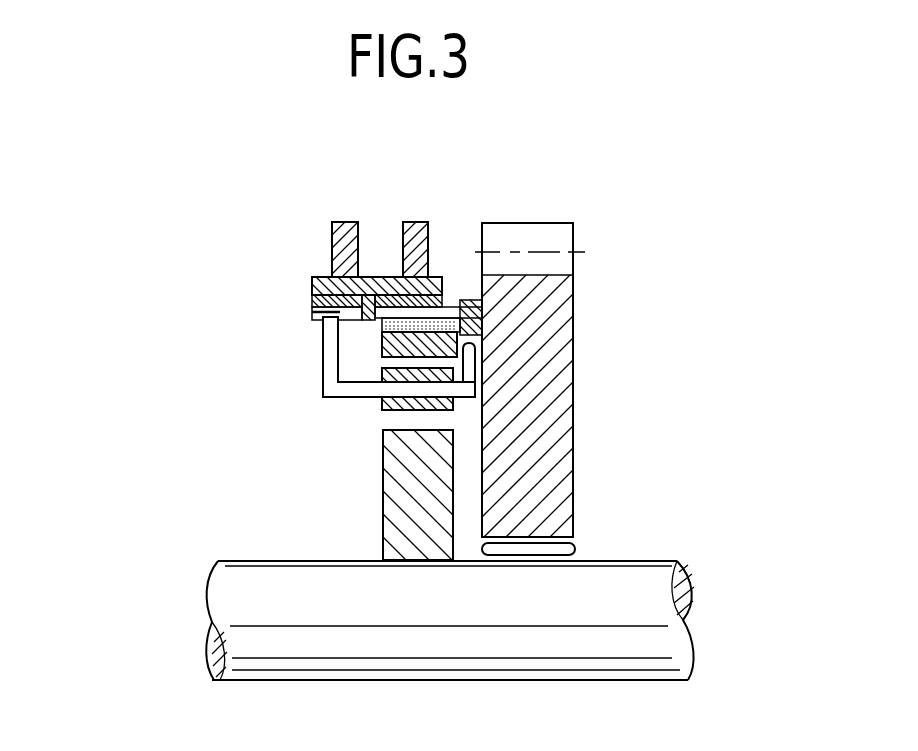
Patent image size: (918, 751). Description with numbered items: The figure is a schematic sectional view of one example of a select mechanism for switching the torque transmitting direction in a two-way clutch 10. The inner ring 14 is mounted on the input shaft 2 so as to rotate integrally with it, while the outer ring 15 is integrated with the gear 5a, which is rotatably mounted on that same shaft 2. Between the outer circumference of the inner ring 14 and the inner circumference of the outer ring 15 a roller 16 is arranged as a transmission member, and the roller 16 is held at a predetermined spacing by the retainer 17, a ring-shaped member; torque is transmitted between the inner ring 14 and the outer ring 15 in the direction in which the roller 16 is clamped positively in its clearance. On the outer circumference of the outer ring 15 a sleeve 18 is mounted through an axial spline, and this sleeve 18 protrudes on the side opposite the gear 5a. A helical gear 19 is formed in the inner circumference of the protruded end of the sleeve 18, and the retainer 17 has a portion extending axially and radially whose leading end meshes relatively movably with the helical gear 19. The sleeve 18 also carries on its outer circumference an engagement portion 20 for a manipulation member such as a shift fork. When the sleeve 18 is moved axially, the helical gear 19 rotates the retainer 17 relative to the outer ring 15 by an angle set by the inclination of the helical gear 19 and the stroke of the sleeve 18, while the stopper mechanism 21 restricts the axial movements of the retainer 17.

The input shaft 2 is at (657, 572).
The inner ring 14 is at (397, 517).
The gear 5a is at (573, 363).
The engagement portion 20 is at (403, 245).
The sleeve 18 is at (312, 278).
The helical gear 19 is at (318, 313).
The outer ring 15 is at (457, 337).
The roller 16 is at (380, 410).
The stopper mechanism 21 is at (478, 385).
The retainer 17 is at (323, 385).
The two-way clutch 10 is at (315, 485).